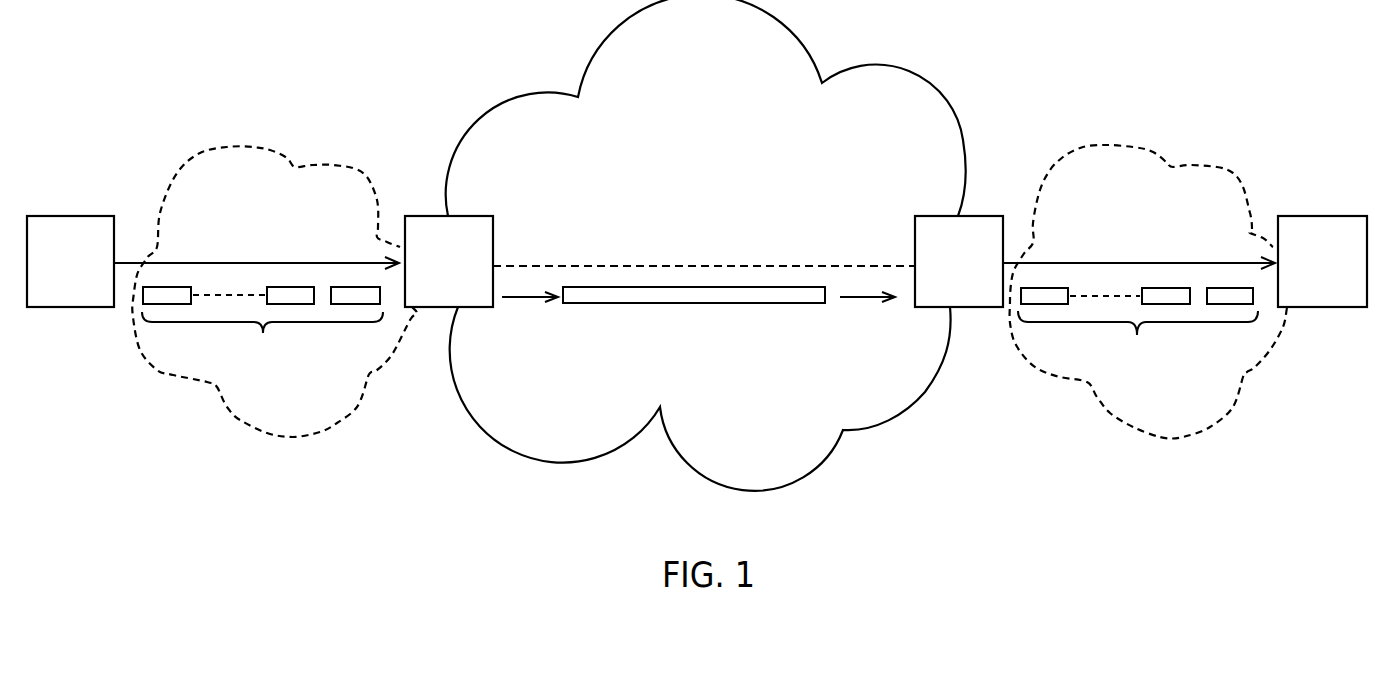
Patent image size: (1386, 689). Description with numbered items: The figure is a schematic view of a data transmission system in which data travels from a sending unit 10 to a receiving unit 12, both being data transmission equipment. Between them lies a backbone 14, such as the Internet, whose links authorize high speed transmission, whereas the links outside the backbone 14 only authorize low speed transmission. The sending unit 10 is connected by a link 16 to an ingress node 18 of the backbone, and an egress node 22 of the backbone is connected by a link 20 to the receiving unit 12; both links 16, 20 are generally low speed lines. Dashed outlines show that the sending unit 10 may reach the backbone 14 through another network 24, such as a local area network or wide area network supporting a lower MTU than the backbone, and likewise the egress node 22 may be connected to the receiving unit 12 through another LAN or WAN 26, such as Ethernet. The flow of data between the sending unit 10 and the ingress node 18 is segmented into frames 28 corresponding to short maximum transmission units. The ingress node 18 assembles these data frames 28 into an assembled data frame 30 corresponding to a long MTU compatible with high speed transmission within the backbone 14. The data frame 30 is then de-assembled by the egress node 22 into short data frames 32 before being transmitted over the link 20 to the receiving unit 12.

The sending unit 10 is at (58, 227).
The receiving unit 12 is at (1315, 220).
The backbone 14 is at (557, 433).
The link 16 is at (215, 263).
The ingress node 18 is at (437, 215).
The link 20 is at (1100, 263).
The egress node 22 is at (960, 225).
The network 24 is at (235, 172).
The LAN or WAN 26 is at (1107, 160).
The frames 28 is at (263, 333).
The assembled data frame 30 is at (733, 295).
The stream of reconstructed packets 32 is at (1137, 335).